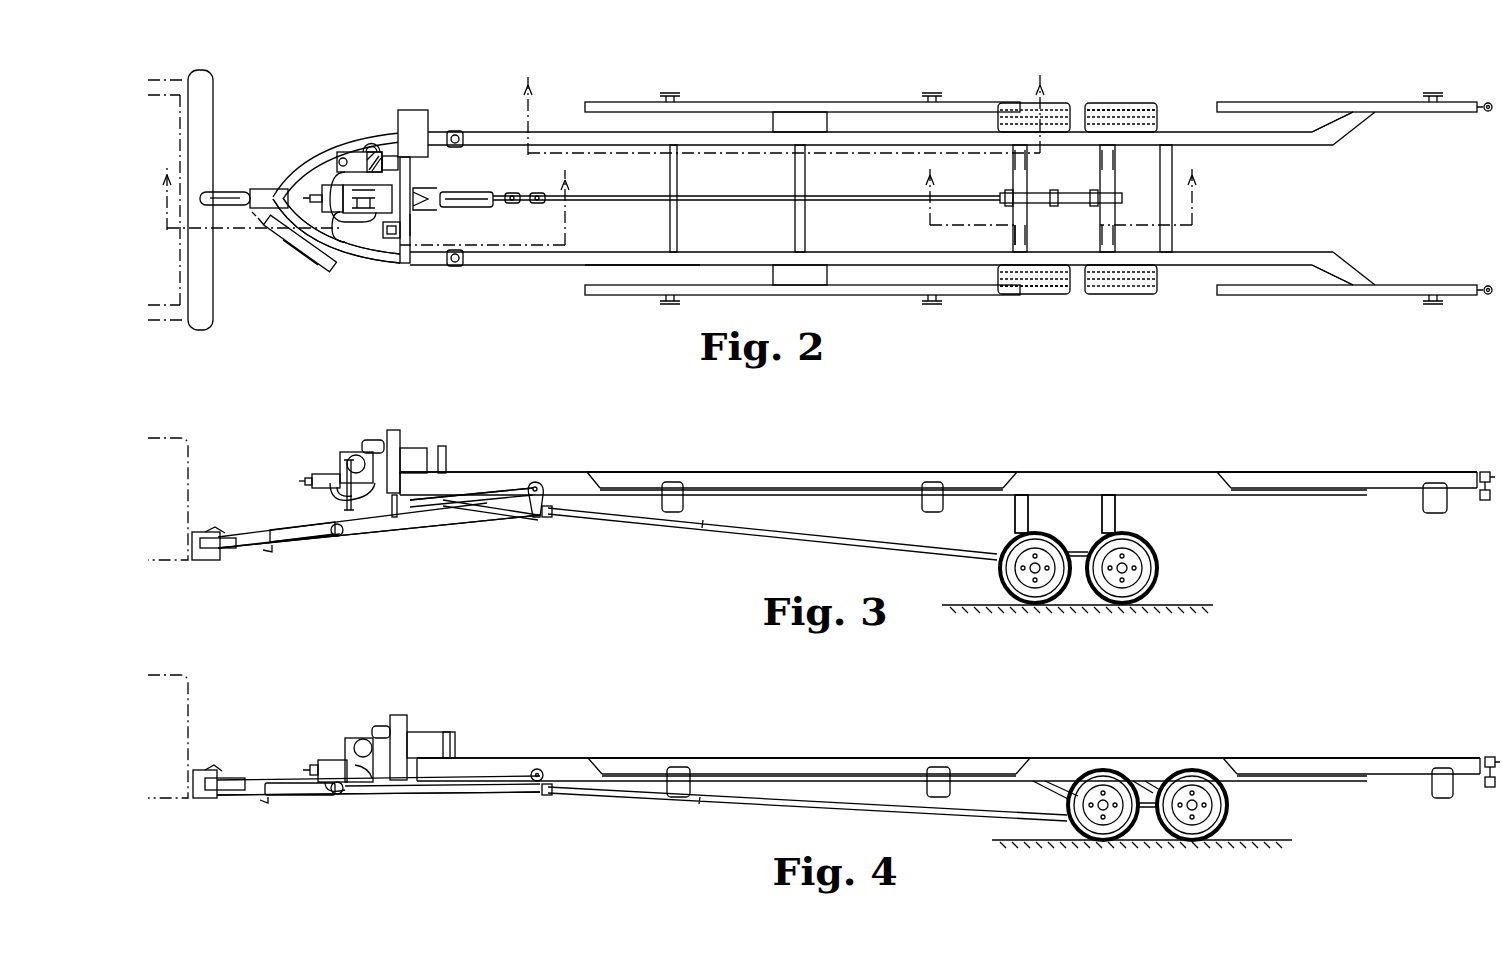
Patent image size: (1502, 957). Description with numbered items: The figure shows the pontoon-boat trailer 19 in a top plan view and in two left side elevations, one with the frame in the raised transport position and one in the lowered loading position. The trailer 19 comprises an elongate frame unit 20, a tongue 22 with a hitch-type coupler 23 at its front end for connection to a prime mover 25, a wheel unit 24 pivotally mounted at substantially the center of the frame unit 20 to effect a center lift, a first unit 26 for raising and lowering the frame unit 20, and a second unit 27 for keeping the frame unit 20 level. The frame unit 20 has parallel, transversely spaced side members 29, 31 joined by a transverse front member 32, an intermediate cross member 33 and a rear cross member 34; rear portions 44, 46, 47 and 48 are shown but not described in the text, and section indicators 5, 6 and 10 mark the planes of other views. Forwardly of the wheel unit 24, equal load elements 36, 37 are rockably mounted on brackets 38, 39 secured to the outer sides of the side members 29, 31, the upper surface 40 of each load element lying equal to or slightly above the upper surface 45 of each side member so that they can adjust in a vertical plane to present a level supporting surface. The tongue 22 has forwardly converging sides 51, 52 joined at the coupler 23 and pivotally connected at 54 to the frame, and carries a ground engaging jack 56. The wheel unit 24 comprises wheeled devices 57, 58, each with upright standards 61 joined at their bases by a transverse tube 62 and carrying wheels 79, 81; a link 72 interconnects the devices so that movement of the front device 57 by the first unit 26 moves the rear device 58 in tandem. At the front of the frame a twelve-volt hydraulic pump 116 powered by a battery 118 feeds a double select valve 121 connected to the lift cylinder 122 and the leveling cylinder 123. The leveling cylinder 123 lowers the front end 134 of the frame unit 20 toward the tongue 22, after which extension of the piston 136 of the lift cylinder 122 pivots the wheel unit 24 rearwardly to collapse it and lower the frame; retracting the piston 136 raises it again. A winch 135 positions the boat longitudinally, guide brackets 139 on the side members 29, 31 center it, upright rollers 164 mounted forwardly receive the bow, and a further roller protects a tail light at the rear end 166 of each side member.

In FIG. 2, the section line 5- 5 is at (365, 201).
In FIG. 2, the section line 6- 6 is at (1061, 188).
In FIG. 2, the section line 10- 10 is at (782, 109).
In FIG. 2, the trailer 19 is at (494, 290).
In FIG. 3, the trailer 19 is at (385, 556).
In FIG. 4, the trailer 19 is at (414, 850).
In FIG. 2, the frame unit 20 is at (580, 281).
In FIG. 3, the frame unit 20 is at (796, 455).
In FIG. 4, the frame unit 20 is at (630, 735).
In FIG. 2, the tongue 22 is at (300, 150).
In FIG. 3, the tongue 22 is at (292, 520).
In FIG. 4, the tongue 22 is at (242, 770).
In FIG. 2, the coupler 23 is at (228, 207).
In FIG. 3, the coupler 23 is at (220, 560).
In FIG. 4, the coupler 23 is at (220, 798).
In FIG. 2, the wheel unit 24 is at (1046, 326).
In FIG. 3, the wheel unit 24 is at (1098, 630).
In FIG. 4, the wheel unit 24 is at (1168, 863).
In FIG. 2, the prime mover 25 is at (220, 92).
In FIG. 3, the prime mover 25 is at (198, 430).
In FIG. 4, the prime mover 25 is at (202, 694).
In FIG. 2, the first unit 26 is at (536, 178).
In FIG. 3, the first unit 26 is at (726, 550).
In FIG. 4, the first unit 26 is at (768, 815).
In FIG. 2, the second unit 27 is at (405, 265).
In FIG. 3, the second unit 27 is at (416, 432).
In FIG. 4, the second unit 27 is at (412, 712).
In FIG. 2, the side member 29 is at (1175, 133).
In FIG. 2, the side member 31 is at (1196, 267).
In FIG. 3, the side member 31 is at (472, 472).
In FIG. 4, the side member 31 is at (1056, 758).
In FIG. 2, the transverse front member 32 is at (412, 225).
In FIG. 2, the intermediate cross member 33 is at (795, 215).
In FIG. 2, the rear cross member 34 is at (1172, 246).
In FIG. 2, the load element 36 is at (770, 102).
In FIG. 2, the load element 37 is at (700, 296).
In FIG. 3, the load element 37 is at (882, 472).
In FIG. 4, the load element 37 is at (896, 758).
In FIG. 2, the bracket 38 is at (832, 115).
In FIG. 2, the bracket 39 is at (830, 286).
In FIG. 3, the upper surface 40 is at (750, 472).
In FIG. 4, the upper surface 40 is at (770, 758).
In FIG. 2, the rear bunk board 44 is at (1310, 102).
In FIG. 3, the upper surface 45 is at (563, 472).
In FIG. 4, the upper surface 45 is at (520, 758).
In FIG. 2, the rear bunk board 46 is at (1316, 296).
In FIG. 3, the rear bunk board 46 is at (1394, 472).
In FIG. 4, the rear bunk board 46 is at (1398, 758).
In FIG. 2, the diagonal frame member 47 is at (1355, 122).
In FIG. 2, the diagonal frame member 48 is at (1352, 273).
In FIG. 2, the side 51 is at (333, 150).
In FIG. 2, the side 52 is at (346, 262).
In FIG. 3, the side 52 is at (462, 520).
In FIG. 4, the side 52 is at (422, 795).
In FIG. 3, the pivotal connection 54 is at (536, 482).
In FIG. 4, the pivotal connection 54 is at (532, 781).
In FIG. 2, the ground engaging jack 56 is at (300, 246).
In FIG. 3, the ground engaging jack 56 is at (291, 546).
In FIG. 4, the ground engaging jack 56 is at (300, 797).
In FIG. 2, the wheeled device 57 is at (1013, 300).
In FIG. 3, the wheeled device 57 is at (1002, 520).
In FIG. 2, the wheeled device 58 is at (1082, 100).
In FIG. 3, the wheeled device 58 is at (1118, 520).
In FIG. 3, the standard 61 is at (1022, 495).
In FIG. 4, the standard 61 is at (1042, 786).
In FIG. 2, the transverse tube 62 is at (1014, 166).
In FIG. 2, the link 72 is at (1050, 192).
In FIG. 3, the link 72 is at (1078, 552).
In FIG. 4, the link 72 is at (1147, 810).
In FIG. 2, the wheel 79 is at (1020, 103).
In FIG. 2, the wheel 81 is at (1056, 296).
In FIG. 3, the wheel 81 is at (999, 570).
In FIG. 4, the wheel 81 is at (1080, 830).
In FIG. 2, the hydraulic pump 116 is at (345, 150).
In FIG. 3, the hydraulic pump 116 is at (364, 452).
In FIG. 4, the hydraulic pump 116 is at (375, 738).
In FIG. 2, the battery 118 is at (416, 110).
In FIG. 3, the battery 118 is at (402, 445).
In FIG. 4, the battery 118 is at (422, 732).
In FIG. 2, the double select valve 121 is at (322, 192).
In FIG. 3, the double select valve 121 is at (326, 474).
In FIG. 4, the double select valve 121 is at (336, 760).
In FIG. 2, the first unit cylinder 122 is at (490, 207).
In FIG. 3, the first unit cylinder 122 is at (480, 510).
In FIG. 2, the second unit cylinder 123 is at (383, 238).
In FIG. 3, the second unit cylinder 123 is at (385, 440).
In FIG. 4, the second unit cylinder 123 is at (388, 726).
In FIG. 3, the front end 134 is at (447, 460).
In FIG. 4, the front end 134 is at (478, 758).
In FIG. 3, the winch 135 is at (352, 460).
In FIG. 3, the cylinder piston 136 is at (399, 508).
In FIG. 2, the guide brackets 139 is at (666, 93).
In FIG. 3, the guide brackets 139 is at (672, 482).
In FIG. 4, the guide brackets 139 is at (1060, 782).
In FIG. 2, the upright rollers 164 is at (456, 130).
In FIG. 2, the rear end 166 is at (1484, 102).
In FIG. 3, the rear end 166 is at (1487, 486).
In FIG. 4, the rear end 166 is at (1492, 772).